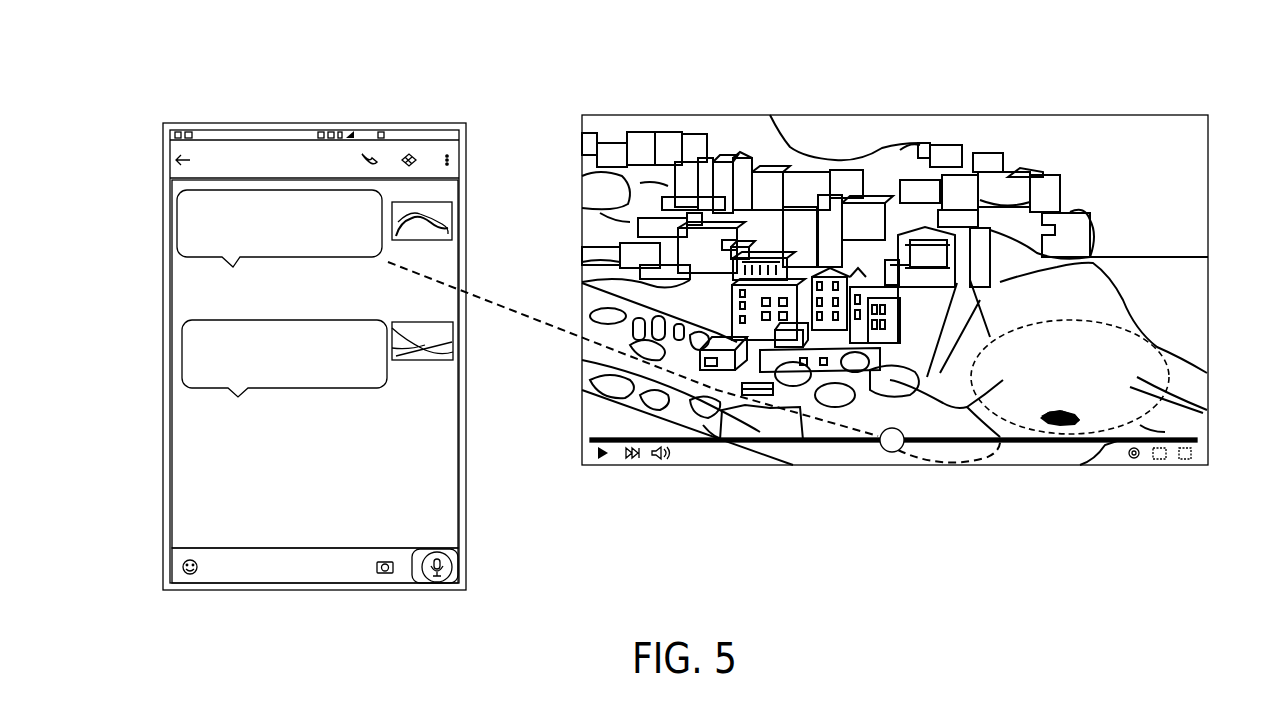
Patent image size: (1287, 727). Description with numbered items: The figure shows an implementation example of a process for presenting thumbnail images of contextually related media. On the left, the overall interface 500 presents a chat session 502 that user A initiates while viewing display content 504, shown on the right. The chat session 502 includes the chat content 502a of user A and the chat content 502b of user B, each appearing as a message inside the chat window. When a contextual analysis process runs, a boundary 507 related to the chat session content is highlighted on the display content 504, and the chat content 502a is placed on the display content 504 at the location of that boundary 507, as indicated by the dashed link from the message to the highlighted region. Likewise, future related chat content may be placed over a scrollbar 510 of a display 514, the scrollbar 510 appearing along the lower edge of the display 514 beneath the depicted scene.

The messaging application user interface 500 is at (242, 107).
The chat session 502 is at (143, 255).
The chat content of user A 502a is at (387, 259).
The chat content of user B 502b is at (284, 390).
The display content 504 is at (792, 105).
The boundary 507 is at (1152, 428).
The scrollbar 510 is at (893, 452).
The display 514 is at (1067, 114).